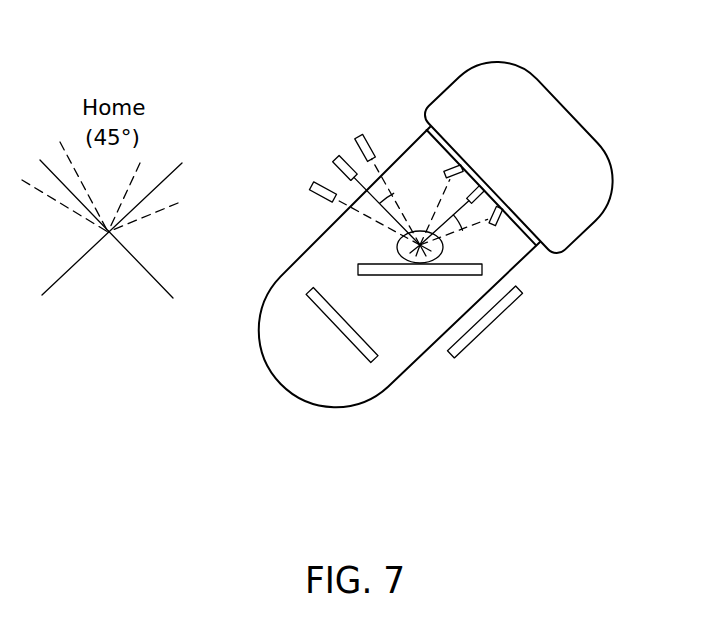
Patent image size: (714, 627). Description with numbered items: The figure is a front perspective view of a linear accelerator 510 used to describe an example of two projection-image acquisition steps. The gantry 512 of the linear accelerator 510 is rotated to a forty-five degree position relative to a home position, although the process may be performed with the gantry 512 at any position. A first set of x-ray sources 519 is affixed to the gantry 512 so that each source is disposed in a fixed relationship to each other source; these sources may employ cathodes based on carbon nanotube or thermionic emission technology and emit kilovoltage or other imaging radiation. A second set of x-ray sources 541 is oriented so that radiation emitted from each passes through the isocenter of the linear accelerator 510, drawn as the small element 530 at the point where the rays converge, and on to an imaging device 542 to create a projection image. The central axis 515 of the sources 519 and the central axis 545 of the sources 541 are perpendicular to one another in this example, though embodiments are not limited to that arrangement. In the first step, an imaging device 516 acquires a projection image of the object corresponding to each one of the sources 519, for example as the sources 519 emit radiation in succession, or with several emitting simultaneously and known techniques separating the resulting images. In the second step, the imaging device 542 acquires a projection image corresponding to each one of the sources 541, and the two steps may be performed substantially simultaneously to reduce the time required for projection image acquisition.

The linear accelerator 510 is at (576, 68).
The gantry 512 is at (320, 226).
The central axis 515 is at (464, 235).
The imaging device 516 is at (342, 312).
The x-ray sources 519 is at (444, 163).
The rotatable element 530 is at (398, 241).
The x-ray sources 541 is at (370, 127).
The imaging device 542 is at (503, 312).
The central axis 545 is at (389, 192).